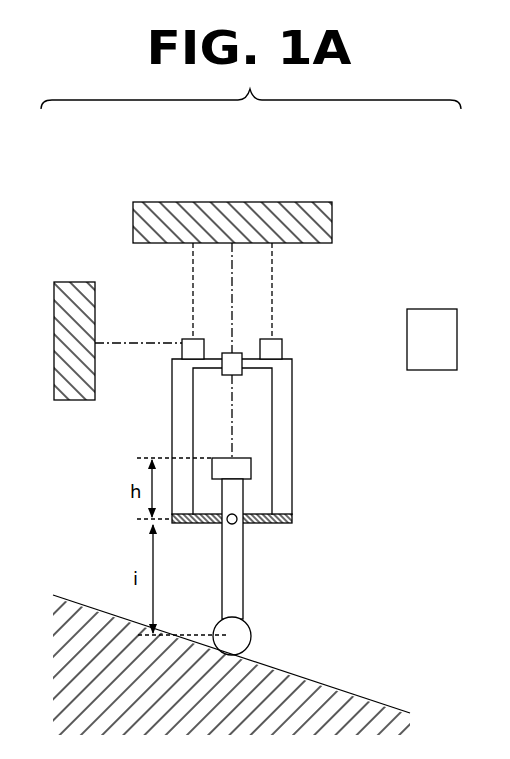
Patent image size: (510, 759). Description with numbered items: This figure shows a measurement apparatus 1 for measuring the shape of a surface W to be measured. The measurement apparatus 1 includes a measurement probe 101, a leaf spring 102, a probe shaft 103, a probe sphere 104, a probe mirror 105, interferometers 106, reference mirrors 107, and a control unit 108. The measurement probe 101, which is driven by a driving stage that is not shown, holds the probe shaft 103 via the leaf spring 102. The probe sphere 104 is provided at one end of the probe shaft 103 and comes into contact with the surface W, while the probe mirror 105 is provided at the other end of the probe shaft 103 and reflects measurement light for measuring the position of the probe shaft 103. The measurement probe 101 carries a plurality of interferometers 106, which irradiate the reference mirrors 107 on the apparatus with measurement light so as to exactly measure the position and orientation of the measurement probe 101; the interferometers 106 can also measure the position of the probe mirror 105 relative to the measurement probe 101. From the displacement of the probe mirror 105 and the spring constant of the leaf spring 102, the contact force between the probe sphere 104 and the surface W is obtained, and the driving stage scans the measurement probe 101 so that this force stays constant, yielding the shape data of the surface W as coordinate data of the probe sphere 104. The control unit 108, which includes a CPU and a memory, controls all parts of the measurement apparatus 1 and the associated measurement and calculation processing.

The measurement apparatus 1 is at (347, 176).
The measurement probe 101 is at (292, 387).
The leaf spring 102 is at (270, 523).
The probe shaft 103 is at (243, 587).
The probe sphere 104 is at (251, 633).
The probe mirror 105 is at (251, 466).
The interferometers 106 is at (195, 339).
The reference mirrors 107 is at (133, 217).
The control unit 108 is at (430, 309).
The surface to be measured W is at (64, 600).